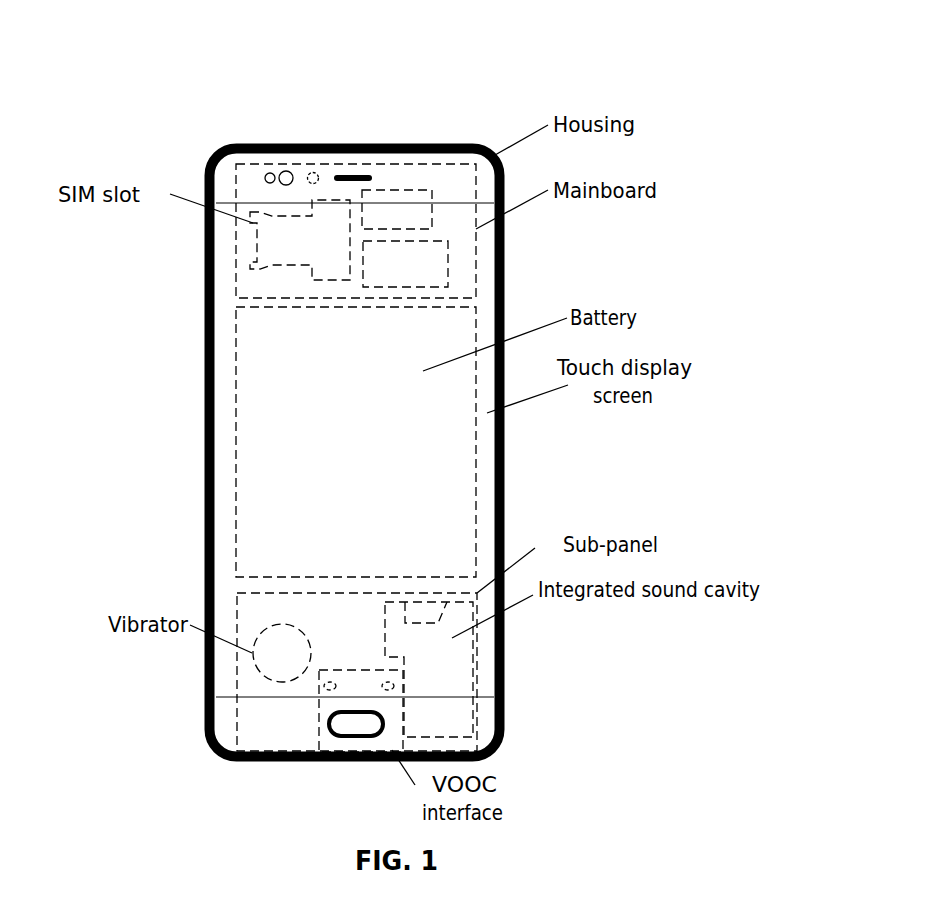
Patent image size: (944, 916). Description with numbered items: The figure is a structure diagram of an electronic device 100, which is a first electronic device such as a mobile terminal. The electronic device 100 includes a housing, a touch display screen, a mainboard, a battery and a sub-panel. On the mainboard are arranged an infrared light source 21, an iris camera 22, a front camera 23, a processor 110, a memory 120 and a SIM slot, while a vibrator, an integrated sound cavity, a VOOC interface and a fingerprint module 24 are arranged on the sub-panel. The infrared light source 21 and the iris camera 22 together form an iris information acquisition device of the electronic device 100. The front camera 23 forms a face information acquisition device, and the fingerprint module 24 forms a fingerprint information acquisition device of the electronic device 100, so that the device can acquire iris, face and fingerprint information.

The electronic device 100 is at (403, 82).
The processor 110 is at (383, 190).
The memory 120 is at (448, 272).
The infrared light source 21 is at (266, 173).
The iris camera 22 is at (286, 171).
The front camera 23 is at (317, 172).
The fingerprint module 24 is at (353, 728).